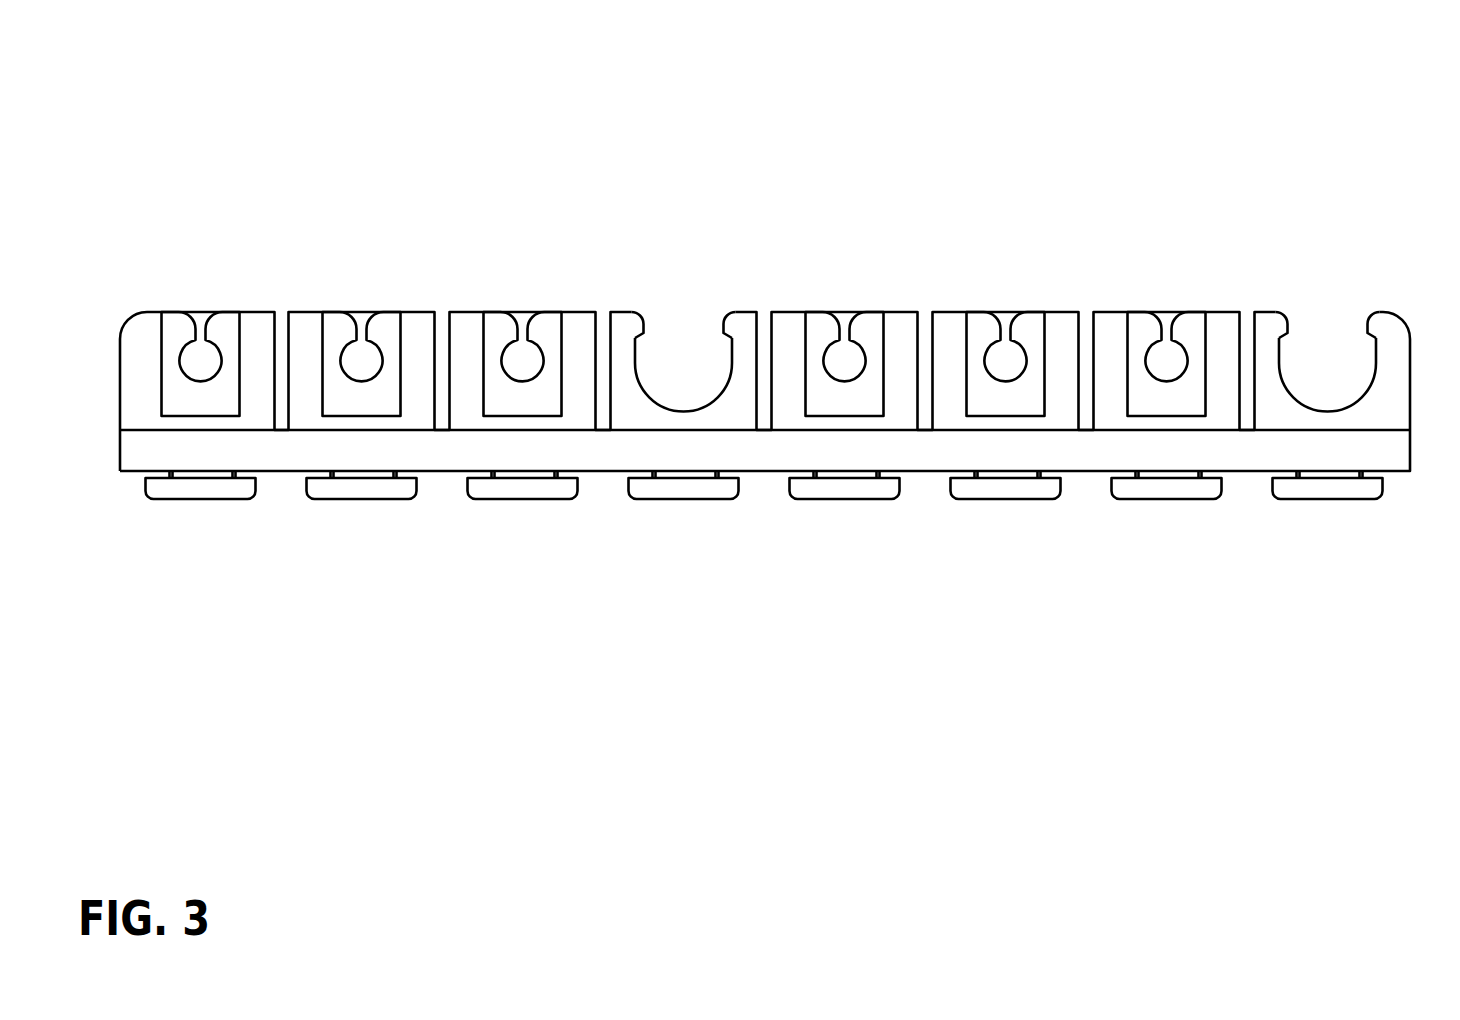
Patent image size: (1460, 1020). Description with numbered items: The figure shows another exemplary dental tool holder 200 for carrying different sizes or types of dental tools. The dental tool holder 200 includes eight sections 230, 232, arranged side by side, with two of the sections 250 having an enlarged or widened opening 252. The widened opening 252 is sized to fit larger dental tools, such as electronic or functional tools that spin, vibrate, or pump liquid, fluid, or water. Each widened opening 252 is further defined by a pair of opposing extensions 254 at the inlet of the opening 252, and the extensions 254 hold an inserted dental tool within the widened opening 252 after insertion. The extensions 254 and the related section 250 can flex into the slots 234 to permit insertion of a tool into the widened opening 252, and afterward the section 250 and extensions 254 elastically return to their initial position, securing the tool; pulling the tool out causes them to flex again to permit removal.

The dental tool holder 200 is at (205, 63).
The section 230 is at (324, 292).
The section 232 is at (159, 292).
The slot 234 is at (1085, 419).
The section 250 is at (754, 290).
The widened opening 252 is at (1352, 298).
The extension 254 is at (711, 312).